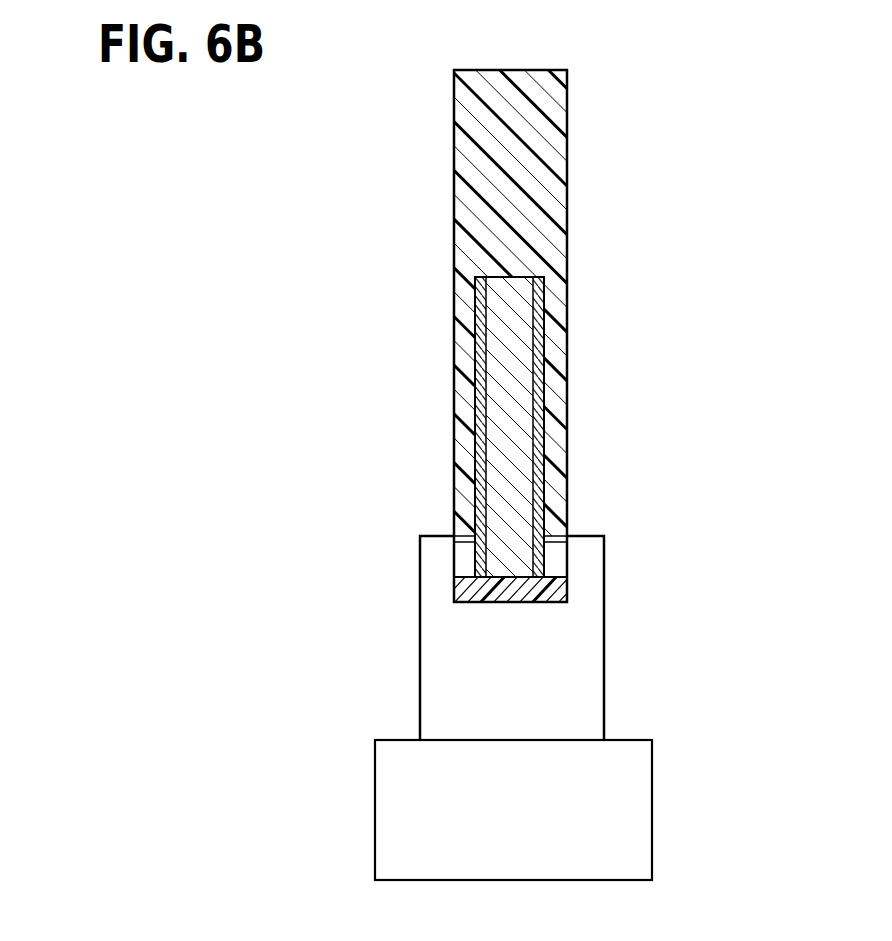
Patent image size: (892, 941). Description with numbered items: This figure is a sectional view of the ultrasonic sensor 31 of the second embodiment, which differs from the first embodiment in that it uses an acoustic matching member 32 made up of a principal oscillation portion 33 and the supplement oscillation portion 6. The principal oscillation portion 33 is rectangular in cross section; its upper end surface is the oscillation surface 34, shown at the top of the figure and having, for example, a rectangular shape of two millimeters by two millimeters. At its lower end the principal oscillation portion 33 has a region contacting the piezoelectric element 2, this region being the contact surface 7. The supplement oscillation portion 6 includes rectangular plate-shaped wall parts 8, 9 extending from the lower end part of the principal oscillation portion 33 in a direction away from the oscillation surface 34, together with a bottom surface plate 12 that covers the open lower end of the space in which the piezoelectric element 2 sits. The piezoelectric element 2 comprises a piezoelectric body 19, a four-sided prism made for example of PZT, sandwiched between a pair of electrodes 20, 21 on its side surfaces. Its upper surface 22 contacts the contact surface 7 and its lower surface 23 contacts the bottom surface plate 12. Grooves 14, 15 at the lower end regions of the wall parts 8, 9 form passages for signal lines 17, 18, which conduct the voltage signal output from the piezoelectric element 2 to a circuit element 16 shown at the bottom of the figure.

The piezoelectric element 2 is at (552, 386).
The supplement oscillation portion 6 is at (557, 316).
The contact surface 7 is at (478, 292).
The wall part 8 is at (465, 410).
The wall part 9 is at (560, 413).
The bottom surface plate 12 is at (570, 588).
The groove 14 is at (455, 535).
The groove 15 is at (568, 535).
The circuit element 16 is at (652, 797).
The signal line 17 is at (420, 647).
The signal line 18 is at (605, 645).
The piezoelectric body 19 is at (518, 448).
The electrode 20 is at (478, 488).
The electrode 21 is at (555, 475).
The upper surface 22 is at (517, 276).
The lower surface 23 is at (475, 592).
The ultrasonic sensor 31 is at (707, 57).
The acoustic matching member 32 is at (572, 203).
The principal oscillation portion 33 is at (545, 124).
The oscillation surface 34 is at (480, 76).